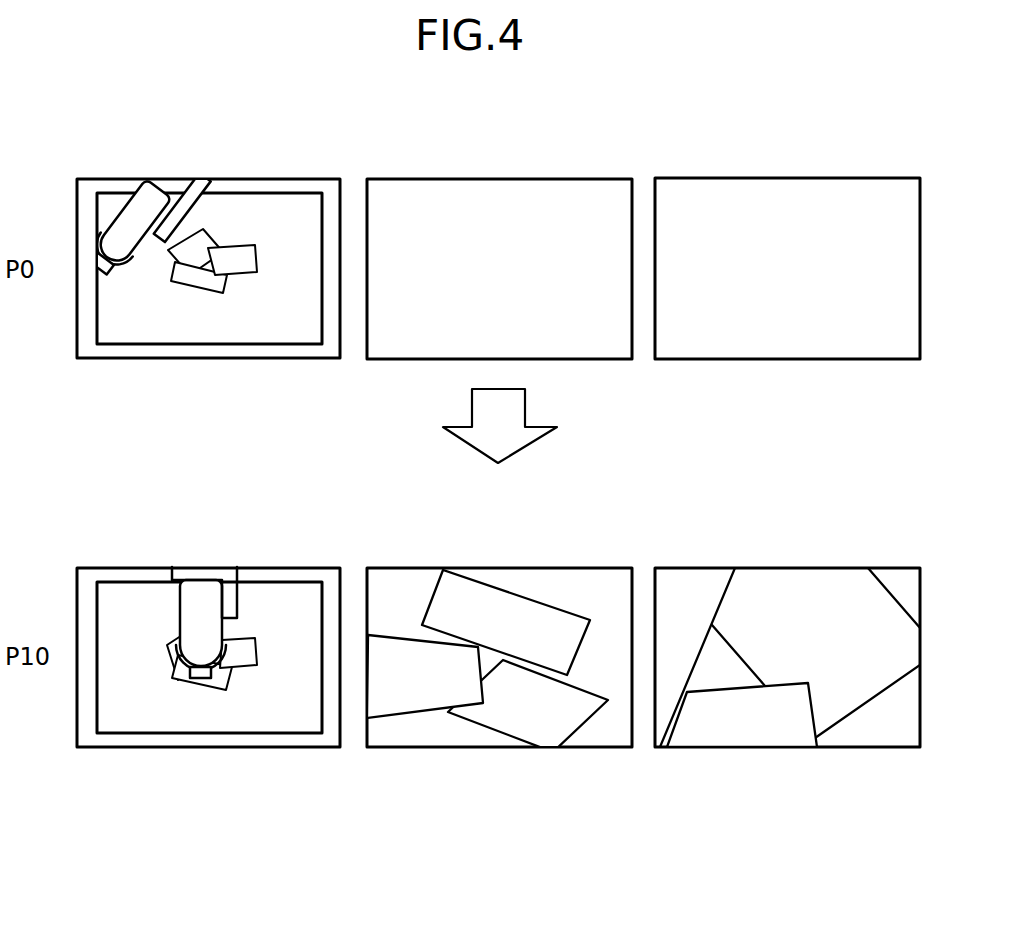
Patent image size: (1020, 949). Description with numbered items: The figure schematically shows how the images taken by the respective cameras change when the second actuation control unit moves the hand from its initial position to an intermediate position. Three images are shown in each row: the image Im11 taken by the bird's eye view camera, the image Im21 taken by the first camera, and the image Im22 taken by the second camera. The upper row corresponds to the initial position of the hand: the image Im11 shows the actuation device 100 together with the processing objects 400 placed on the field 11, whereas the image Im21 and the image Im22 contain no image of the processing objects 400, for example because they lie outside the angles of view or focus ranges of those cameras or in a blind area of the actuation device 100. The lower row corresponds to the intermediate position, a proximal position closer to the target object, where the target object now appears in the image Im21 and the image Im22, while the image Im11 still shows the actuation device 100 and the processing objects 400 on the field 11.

The actuation device 100 is at (123, 212).
The field 11 is at (128, 346).
The processing objects 400 is at (541, 518).
The image taken by the bird's eye view camera Im11 is at (302, 178).
The image taken by the first camera Im21 is at (590, 178).
The image taken by the second camera Im22 is at (878, 177).